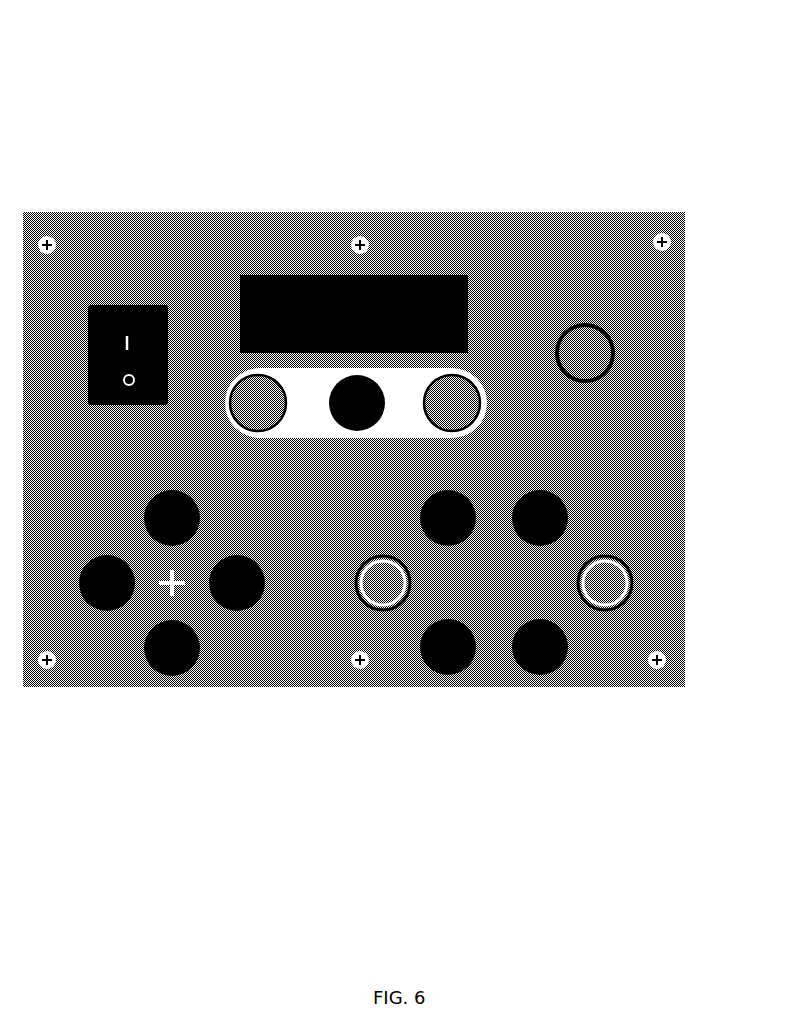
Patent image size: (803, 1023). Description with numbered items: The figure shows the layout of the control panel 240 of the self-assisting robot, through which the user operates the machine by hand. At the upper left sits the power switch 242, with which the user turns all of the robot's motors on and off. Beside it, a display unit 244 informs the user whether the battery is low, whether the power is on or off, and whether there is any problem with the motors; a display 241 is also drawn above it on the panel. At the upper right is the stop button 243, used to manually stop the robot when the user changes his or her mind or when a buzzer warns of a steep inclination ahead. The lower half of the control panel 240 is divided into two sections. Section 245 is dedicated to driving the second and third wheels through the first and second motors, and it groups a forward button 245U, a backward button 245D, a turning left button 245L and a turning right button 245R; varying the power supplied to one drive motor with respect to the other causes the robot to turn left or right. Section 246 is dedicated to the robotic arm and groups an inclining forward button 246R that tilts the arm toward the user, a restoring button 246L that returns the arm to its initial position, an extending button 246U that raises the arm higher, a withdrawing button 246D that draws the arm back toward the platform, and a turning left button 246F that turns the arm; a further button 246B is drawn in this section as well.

The control panel 240 is at (167, 138).
The display 241 is at (425, 271).
The power switch 242 is at (123, 306).
The stop button 243 is at (585, 326).
The display unit 244 is at (476, 378).
The section 245 is at (178, 590).
The forward button 245U is at (145, 512).
The turning left button 245L is at (78, 578).
The turning right button 245R is at (256, 603).
The backward button 245D is at (172, 677).
The section 246 is at (483, 578).
The extending button 246U is at (422, 503).
The turning left button 246F is at (530, 488).
The restoring button 246L is at (360, 578).
The inclining forward button 246R is at (632, 580).
The withdrawing button 246D is at (448, 676).
The back button 246B is at (540, 676).